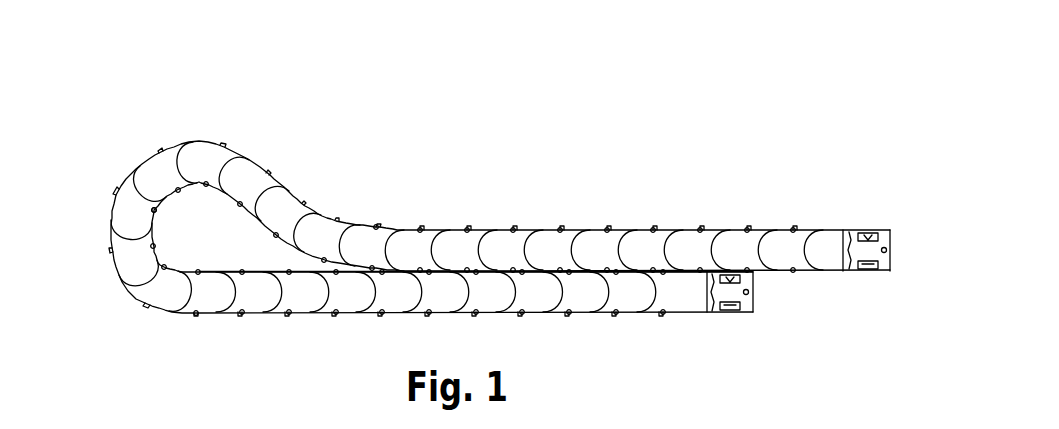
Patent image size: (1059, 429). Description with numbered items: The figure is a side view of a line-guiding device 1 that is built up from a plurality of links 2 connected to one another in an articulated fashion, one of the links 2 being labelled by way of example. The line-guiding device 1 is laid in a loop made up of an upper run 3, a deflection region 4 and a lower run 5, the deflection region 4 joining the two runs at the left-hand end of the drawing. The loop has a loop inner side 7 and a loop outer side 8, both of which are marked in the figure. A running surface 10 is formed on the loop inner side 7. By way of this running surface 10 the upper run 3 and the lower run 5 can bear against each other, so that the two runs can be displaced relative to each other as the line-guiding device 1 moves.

The line-guiding device 1 is at (460, 208).
The link 2 is at (207, 157).
The upper run 3 is at (597, 229).
The deflection region 4 is at (262, 172).
The lower run 5 is at (261, 316).
The loop inner side 7 is at (160, 215).
The loop outer side 8 is at (114, 199).
The running surface 10 is at (196, 235).